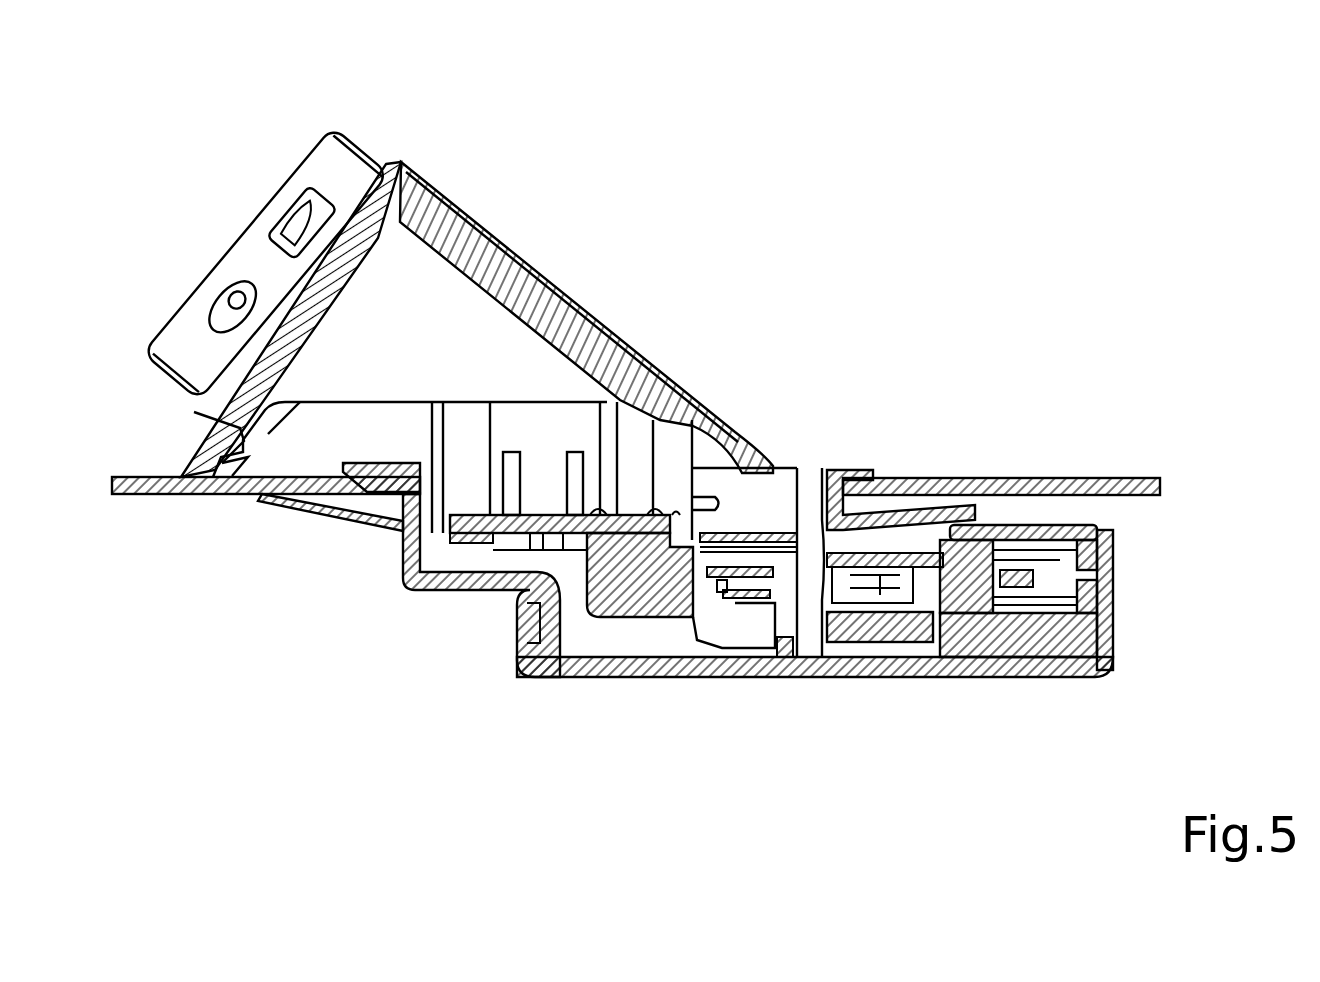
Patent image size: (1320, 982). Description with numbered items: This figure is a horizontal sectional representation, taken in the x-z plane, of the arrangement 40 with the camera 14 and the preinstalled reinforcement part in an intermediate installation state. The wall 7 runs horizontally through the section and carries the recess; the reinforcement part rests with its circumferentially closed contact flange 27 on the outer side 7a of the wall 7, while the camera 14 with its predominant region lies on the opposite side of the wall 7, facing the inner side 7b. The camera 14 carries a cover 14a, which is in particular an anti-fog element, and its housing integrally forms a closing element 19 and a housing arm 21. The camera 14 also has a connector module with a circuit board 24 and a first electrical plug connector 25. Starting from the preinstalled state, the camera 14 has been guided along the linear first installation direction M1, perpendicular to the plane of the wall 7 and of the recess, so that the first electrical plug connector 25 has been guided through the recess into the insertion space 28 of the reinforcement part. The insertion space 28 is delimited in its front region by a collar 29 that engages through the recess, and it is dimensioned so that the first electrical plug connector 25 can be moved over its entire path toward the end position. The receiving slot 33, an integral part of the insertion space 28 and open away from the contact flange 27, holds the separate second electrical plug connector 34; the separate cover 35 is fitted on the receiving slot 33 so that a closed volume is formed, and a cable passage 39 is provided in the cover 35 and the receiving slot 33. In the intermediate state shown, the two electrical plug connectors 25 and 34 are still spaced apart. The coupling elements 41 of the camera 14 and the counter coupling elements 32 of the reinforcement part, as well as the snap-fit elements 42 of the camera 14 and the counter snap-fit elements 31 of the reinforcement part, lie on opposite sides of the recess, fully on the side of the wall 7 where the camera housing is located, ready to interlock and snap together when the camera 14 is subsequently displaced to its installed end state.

The wall 7 is at (647, 456).
The outer side of the wall 7a is at (1122, 496).
The inner side of the wall 7b is at (1038, 478).
The camera 14 is at (277, 242).
The cover 14a is at (245, 250).
The closing element 19 is at (400, 190).
The housing arm 21 is at (568, 300).
The circuit board 24 is at (508, 520).
The first electrical plug connector 25 is at (730, 617).
The contact flange 27 is at (313, 508).
The insertion space 28 is at (795, 465).
The collar 29 is at (818, 460).
The counter snap-fit elements 31 is at (843, 462).
The counter coupling elements 32 is at (365, 462).
The receiving slot 33 is at (1010, 478).
The second electrical plug connector 34 is at (975, 478).
The cover 35 is at (1045, 677).
The cable passage 39 is at (1134, 580).
The arrangement 40 is at (1016, 413).
The coupling elements 41 is at (215, 495).
The snap-fit elements 42 is at (750, 465).
The first installation direction M1 is at (548, 160).